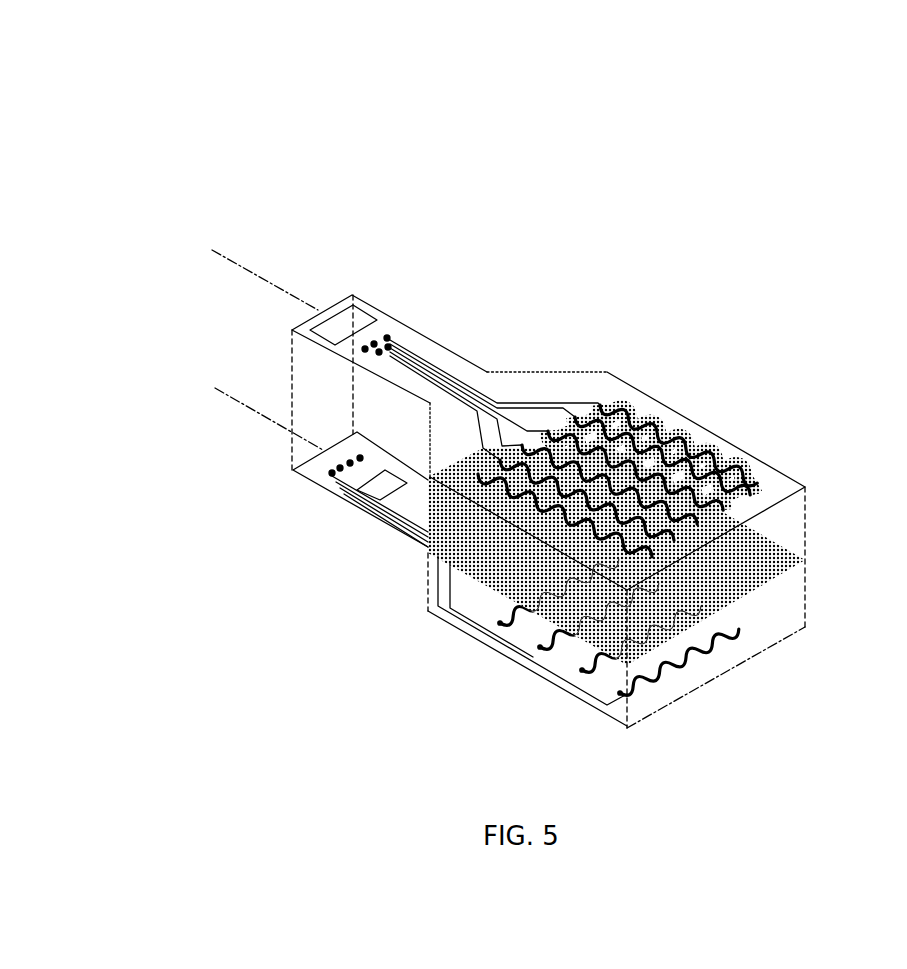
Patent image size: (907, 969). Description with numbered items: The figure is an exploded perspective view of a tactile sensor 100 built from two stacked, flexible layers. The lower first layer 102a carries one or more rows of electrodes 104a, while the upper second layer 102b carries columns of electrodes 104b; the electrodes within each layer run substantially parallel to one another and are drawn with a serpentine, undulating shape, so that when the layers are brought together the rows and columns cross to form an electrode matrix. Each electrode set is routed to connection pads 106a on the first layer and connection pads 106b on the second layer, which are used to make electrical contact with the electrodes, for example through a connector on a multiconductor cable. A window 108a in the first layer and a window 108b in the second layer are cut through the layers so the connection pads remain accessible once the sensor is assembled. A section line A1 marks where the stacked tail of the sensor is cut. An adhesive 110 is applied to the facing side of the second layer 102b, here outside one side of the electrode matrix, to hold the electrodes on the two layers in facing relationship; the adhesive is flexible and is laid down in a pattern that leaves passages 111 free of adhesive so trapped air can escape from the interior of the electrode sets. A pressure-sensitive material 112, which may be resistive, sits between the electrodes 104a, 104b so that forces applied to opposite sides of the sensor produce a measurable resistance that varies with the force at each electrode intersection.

The tactile sensor 100 is at (214, 48).
The section line A1 is at (256, 339).
The first layer 102a is at (780, 632).
The second layer 102b is at (787, 483).
The row electrodes 104a is at (648, 693).
The column electrodes 104b is at (602, 407).
The connection pads 106a is at (333, 475).
The connection pads 106b is at (385, 338).
The window 108a is at (378, 497).
The window 108b is at (353, 305).
The adhesive 110 is at (732, 480).
The passages 111 is at (682, 452).
The pressure-sensitive material 112 is at (783, 553).